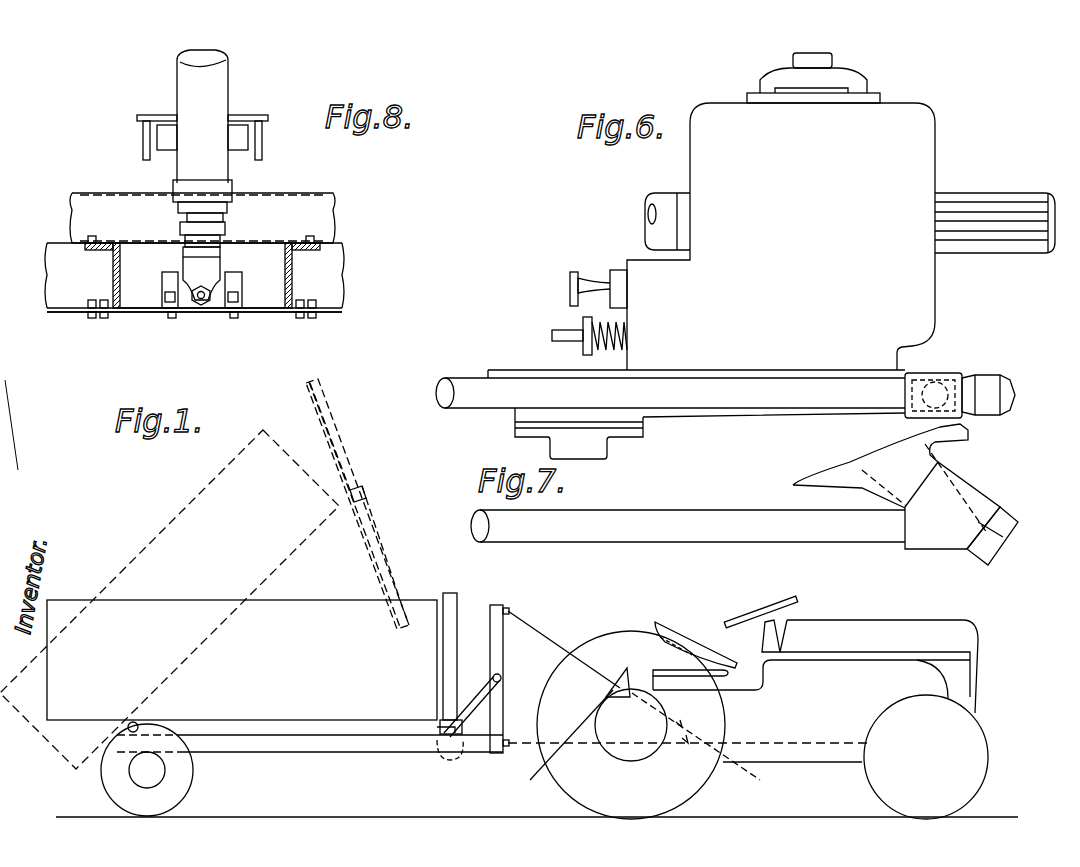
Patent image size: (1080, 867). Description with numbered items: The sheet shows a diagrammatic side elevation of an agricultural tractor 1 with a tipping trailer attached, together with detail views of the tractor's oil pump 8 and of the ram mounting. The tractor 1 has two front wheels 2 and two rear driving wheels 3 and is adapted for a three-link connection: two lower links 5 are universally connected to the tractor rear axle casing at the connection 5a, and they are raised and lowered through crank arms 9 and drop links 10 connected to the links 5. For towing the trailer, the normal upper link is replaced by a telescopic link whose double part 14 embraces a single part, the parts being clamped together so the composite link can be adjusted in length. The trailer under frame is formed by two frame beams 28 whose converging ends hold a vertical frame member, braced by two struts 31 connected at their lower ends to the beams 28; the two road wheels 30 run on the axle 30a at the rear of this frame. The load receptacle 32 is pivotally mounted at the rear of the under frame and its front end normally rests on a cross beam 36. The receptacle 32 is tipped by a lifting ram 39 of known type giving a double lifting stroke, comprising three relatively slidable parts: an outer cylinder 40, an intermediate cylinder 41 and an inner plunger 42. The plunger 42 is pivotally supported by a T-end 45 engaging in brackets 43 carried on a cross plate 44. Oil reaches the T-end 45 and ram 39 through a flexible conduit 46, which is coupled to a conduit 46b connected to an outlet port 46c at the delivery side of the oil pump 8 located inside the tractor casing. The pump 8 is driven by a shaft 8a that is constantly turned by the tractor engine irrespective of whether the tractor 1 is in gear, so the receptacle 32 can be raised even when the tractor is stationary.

In FIG. 1, the agricultural tractor 1 is at (813, 665).
In FIG. 1, the front wheels 2 is at (926, 757).
In FIG. 1, the rear driving wheels 3 is at (601, 641).
In FIG. 1, the lower links 5 is at (569, 731).
In FIG. 1, the lower link connection on rear axle casing 5a is at (640, 743).
In FIG. 6, the oil pump 8 is at (743, 211).
In FIG. 6, the pump drive shaft 8a is at (995, 225).
In FIG. 1, the crank arms 9 is at (637, 686).
In FIG. 1, the drop links 10 is at (592, 728).
In FIG. 1, the double part of telescopic link 14 is at (545, 630).
In FIG. 8, the frame beams 28 is at (292, 284).
In FIG. 1, the frame beams 28 is at (355, 753).
In FIG. 1, the road wheels 30 is at (172, 800).
In FIG. 1, the axle 30a is at (160, 772).
In FIG. 1, the struts 31 is at (468, 720).
In FIG. 1, the load receptacle 32 is at (68, 600).
In FIG. 1, the cross beam 36 is at (432, 733).
In FIG. 1, the lifting ram 39 is at (335, 452).
In FIG. 8, the outer cylinder 40 is at (178, 89).
In FIG. 1, the outer cylinder 40 is at (352, 480).
In FIG. 8, the intermediate cylinder 41 is at (230, 220).
In FIG. 1, the intermediate cylinder 41 is at (382, 570).
In FIG. 8, the inner plunger 42 is at (181, 253).
In FIG. 1, the inner plunger 42 is at (415, 628).
In FIG. 8, the brackets 43 is at (236, 296).
In FIG. 8, the cross plate 44 is at (265, 313).
In FIG. 8, the T-end 45 is at (186, 300).
In FIG. 8, the flexible conduit 46 is at (203, 312).
In FIG. 6, the conduit 46b is at (672, 523).
In FIG. 7, the outlet port 46c is at (912, 467).